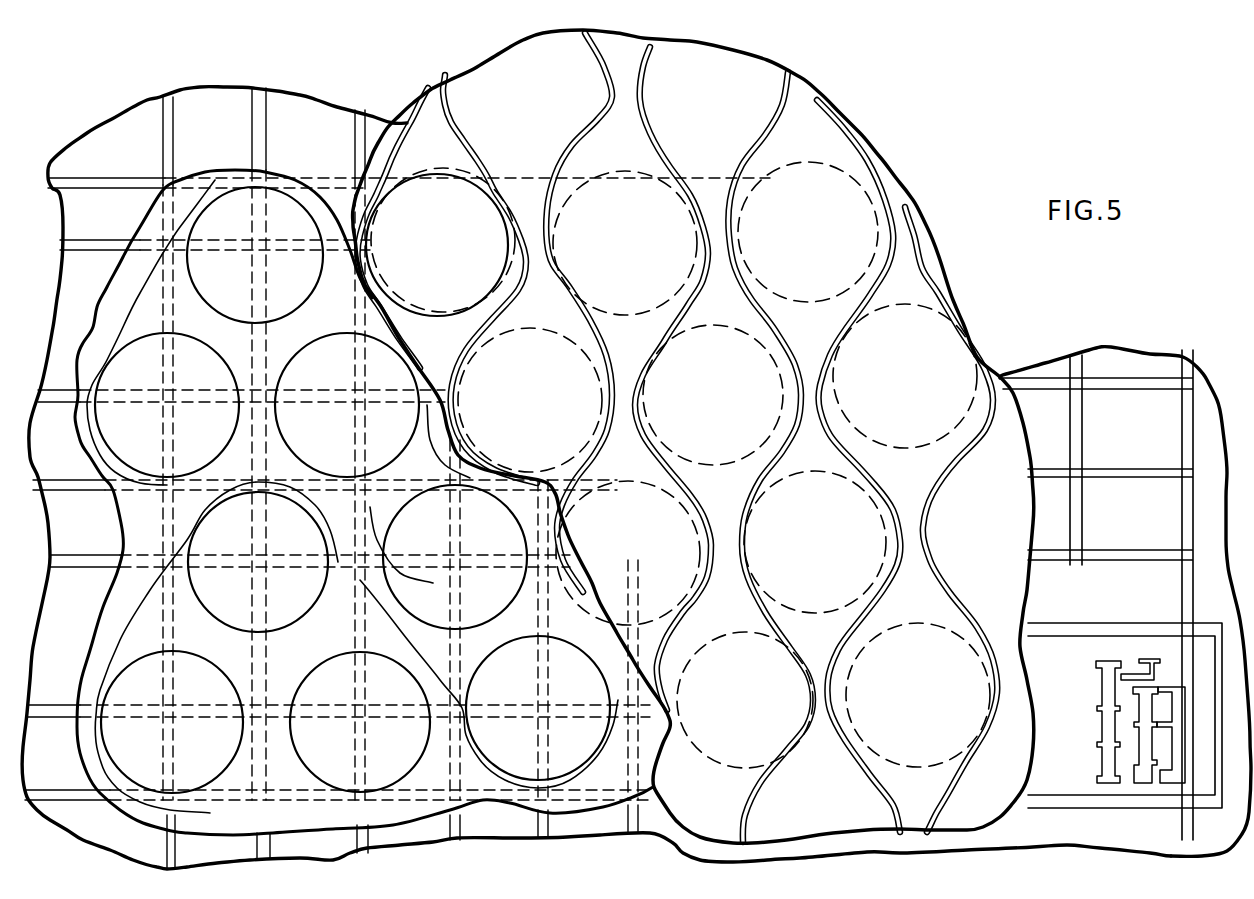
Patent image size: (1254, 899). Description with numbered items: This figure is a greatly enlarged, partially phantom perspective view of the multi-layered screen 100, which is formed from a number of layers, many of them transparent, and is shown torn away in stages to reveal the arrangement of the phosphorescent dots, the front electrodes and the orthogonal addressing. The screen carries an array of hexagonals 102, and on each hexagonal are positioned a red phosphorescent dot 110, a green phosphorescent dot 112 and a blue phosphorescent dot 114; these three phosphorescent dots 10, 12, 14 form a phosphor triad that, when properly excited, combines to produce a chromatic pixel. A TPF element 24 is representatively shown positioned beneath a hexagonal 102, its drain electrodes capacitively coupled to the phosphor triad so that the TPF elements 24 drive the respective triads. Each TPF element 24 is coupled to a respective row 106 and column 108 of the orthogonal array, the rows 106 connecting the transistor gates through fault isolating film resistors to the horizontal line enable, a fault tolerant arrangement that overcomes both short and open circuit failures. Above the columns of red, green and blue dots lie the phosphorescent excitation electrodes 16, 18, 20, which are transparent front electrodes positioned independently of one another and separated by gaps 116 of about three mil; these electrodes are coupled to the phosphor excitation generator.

The phosphorescent dot 10 is at (454, 306).
The phosphorescent dot 12 is at (551, 456).
The phosphorescent dot 14 is at (634, 293).
The phosphorescent excitation electrode 16 is at (444, 169).
The phosphorescent excitation electrode 18 is at (544, 136).
The phosphorescent excitation electrode 20 is at (636, 165).
The TPF element 24 is at (1056, 718).
The multi-layered screen 100 is at (145, 96).
The hexagonal 102 is at (240, 683).
The row 106 is at (1088, 804).
The column 108 is at (1183, 425).
The red phosphorescent dot 110 is at (390, 118).
The green phosphorescent dot 112 is at (243, 185).
The blue phosphorescent dot 114 is at (653, 168).
The gap 116 is at (444, 76).